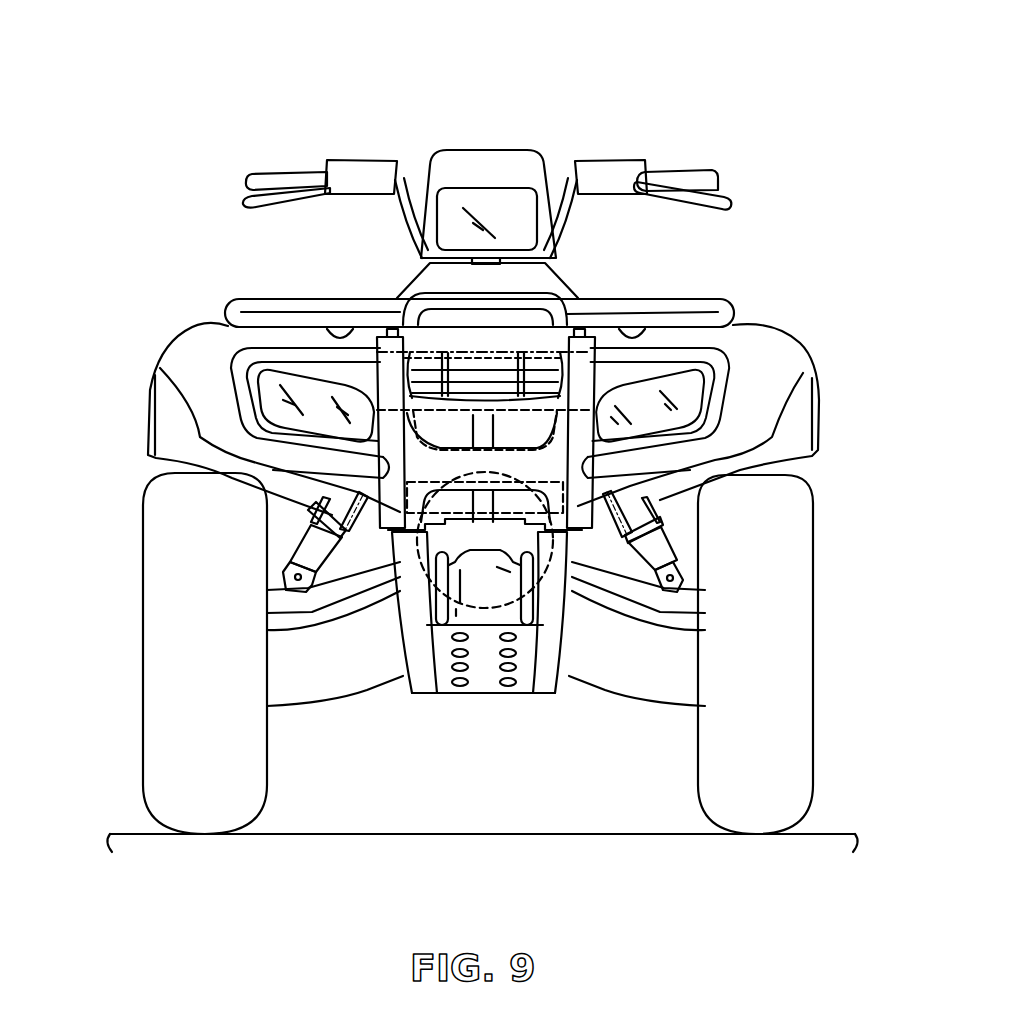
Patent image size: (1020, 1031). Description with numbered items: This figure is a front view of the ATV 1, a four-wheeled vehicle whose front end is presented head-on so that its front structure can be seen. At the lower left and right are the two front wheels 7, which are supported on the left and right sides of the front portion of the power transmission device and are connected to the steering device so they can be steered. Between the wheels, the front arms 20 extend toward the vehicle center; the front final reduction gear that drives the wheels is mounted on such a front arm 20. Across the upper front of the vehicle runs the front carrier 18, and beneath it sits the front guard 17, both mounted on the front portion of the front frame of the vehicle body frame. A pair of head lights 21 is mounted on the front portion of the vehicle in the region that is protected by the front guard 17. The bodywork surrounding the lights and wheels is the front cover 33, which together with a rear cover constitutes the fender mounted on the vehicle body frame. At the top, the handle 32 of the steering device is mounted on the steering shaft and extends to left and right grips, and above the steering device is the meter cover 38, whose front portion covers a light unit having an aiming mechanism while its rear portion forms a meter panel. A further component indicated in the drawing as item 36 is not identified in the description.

The ATV 1 is at (201, 124).
The front wheels 7 is at (134, 782).
The front guard 17 is at (366, 332).
The front carrier 18 is at (606, 297).
The front arm 20 is at (343, 710).
The head lights 21 is at (322, 410).
The handle 32 is at (285, 172).
The front cover 33 is at (180, 308).
The radiator 36 is at (408, 549).
The meter cover 38 is at (497, 163).